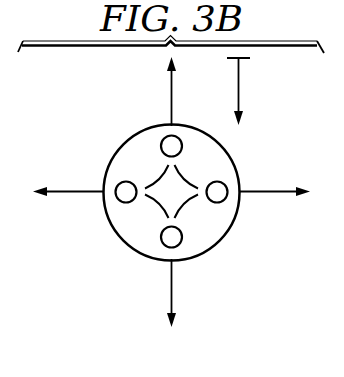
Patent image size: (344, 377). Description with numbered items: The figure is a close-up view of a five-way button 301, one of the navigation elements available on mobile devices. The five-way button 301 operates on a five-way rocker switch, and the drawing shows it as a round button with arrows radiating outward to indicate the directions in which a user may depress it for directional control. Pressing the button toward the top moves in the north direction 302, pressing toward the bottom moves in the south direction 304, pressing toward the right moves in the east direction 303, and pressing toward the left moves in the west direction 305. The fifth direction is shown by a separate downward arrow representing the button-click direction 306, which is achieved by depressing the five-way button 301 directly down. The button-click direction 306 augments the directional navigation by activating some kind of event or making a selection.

The 5-way button 301 is at (225, 237).
The north direction 302 is at (171, 98).
The east direction 303 is at (266, 190).
The south direction 304 is at (170, 287).
The west direction 305 is at (75, 190).
The button-click direction 306 is at (239, 85).